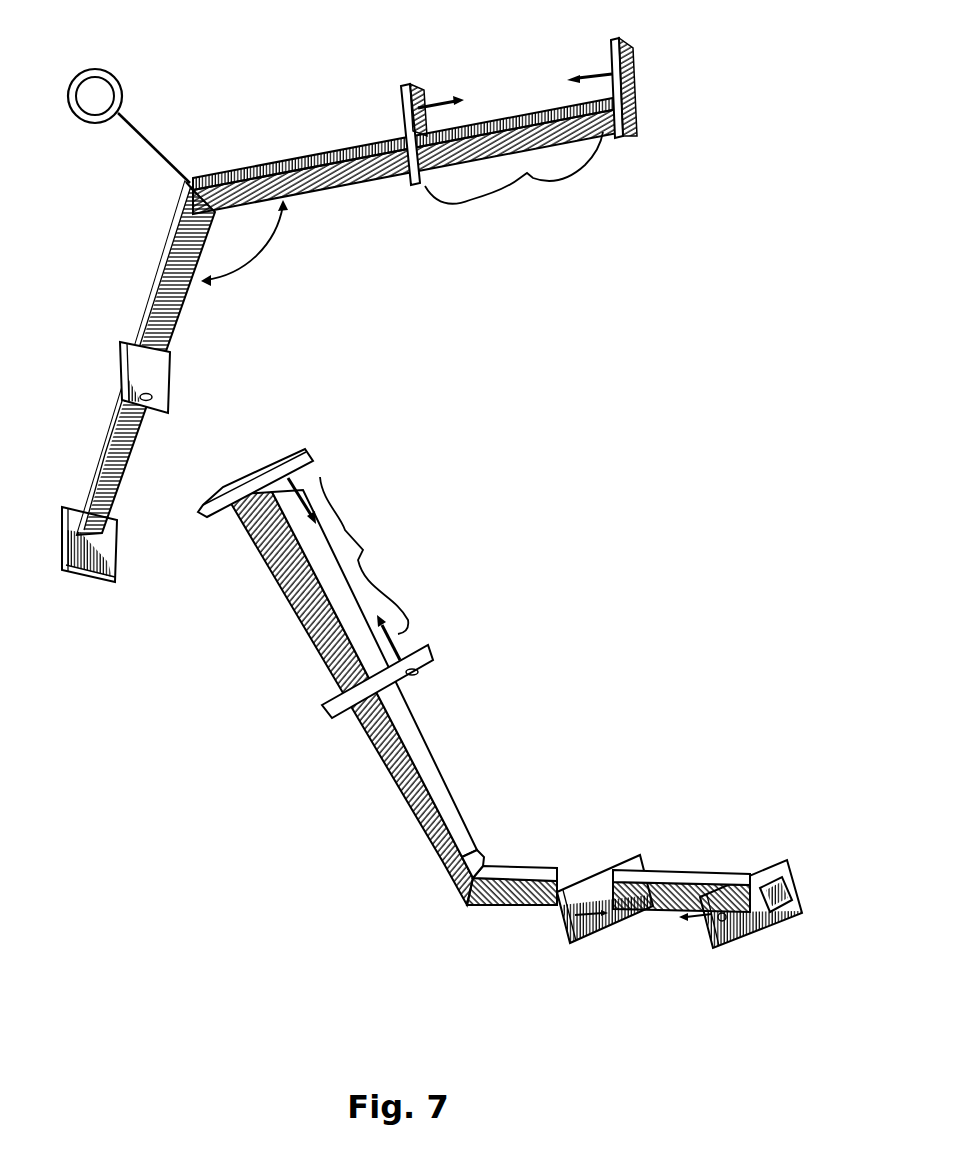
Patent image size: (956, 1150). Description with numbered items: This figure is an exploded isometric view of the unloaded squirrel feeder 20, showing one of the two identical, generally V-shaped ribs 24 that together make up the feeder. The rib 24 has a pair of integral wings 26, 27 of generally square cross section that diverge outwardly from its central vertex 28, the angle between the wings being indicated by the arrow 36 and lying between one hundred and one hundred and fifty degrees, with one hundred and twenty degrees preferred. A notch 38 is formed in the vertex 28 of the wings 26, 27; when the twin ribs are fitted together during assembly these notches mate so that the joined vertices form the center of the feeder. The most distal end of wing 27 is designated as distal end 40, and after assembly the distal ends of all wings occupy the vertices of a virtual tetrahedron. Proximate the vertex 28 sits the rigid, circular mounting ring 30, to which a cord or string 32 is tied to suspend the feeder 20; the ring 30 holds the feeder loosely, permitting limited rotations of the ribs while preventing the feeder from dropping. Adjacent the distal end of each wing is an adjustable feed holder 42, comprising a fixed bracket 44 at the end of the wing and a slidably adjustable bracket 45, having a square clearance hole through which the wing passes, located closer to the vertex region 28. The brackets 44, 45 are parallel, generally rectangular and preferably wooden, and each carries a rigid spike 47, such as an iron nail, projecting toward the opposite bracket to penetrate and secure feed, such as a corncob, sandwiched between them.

The squirrel feeder 20 is at (442, 498).
The rib 24 is at (539, 849).
The wing 26 is at (99, 453).
The wing 27 is at (636, 910).
The vertex 28 is at (193, 176).
The mounting ring 30 is at (118, 66).
The cord or string 32 is at (294, 122).
The angle between wings 36 is at (270, 242).
The notch 38 is at (483, 862).
The distal end 40 is at (775, 892).
The adjustable feed holder 42 is at (461, 383).
The fixed bracket 44 is at (403, 106).
The slidably adjustable bracket 45 is at (74, 575).
The spike 47 is at (442, 118).